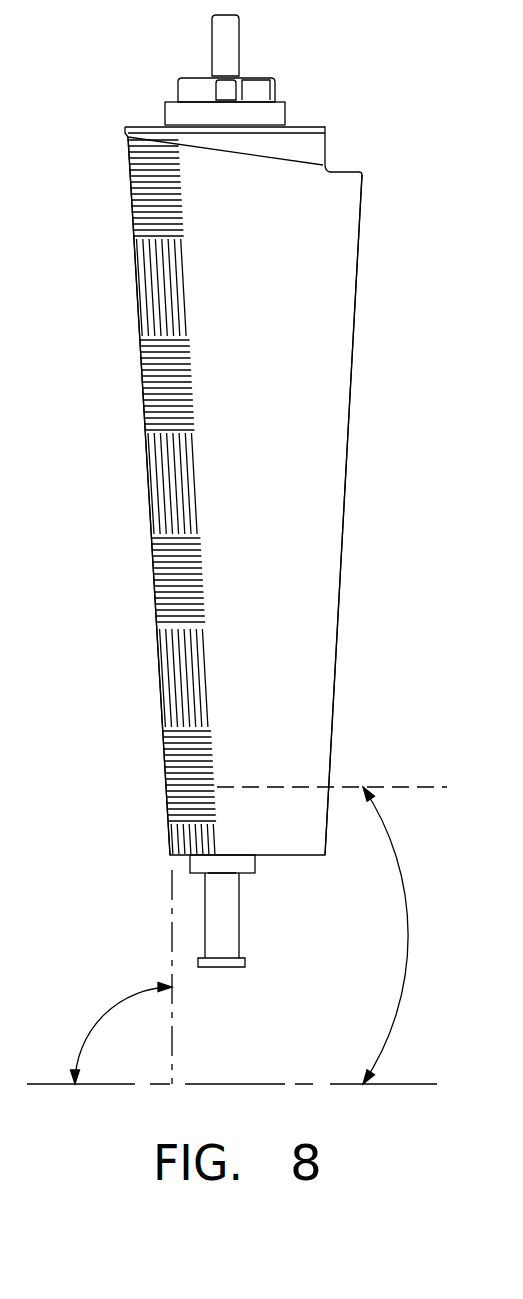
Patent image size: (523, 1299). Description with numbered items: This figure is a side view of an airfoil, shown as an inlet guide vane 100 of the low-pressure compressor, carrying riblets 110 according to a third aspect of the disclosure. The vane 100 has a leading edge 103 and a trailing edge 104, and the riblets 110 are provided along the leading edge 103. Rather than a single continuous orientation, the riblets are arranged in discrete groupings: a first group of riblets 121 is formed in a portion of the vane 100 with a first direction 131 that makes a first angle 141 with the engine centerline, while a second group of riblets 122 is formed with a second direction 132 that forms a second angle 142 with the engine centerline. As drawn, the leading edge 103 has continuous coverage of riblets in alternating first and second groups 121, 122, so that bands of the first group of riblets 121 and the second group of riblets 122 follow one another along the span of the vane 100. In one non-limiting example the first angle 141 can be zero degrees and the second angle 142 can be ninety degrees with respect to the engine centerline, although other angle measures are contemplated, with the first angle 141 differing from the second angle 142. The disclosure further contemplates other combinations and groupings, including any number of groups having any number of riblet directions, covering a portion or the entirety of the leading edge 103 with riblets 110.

The inlet guide vane 100 is at (288, 385).
The leading edge 103 is at (163, 728).
The trailing edge 104 is at (341, 621).
The riblet 110 is at (113, 497).
The first group of riblets 121 is at (118, 432).
The second group of riblets 122 is at (128, 533).
The first direction 131 is at (172, 1032).
The second direction 132 is at (383, 787).
The first angle 141 is at (100, 1015).
The second angle 142 is at (408, 943).